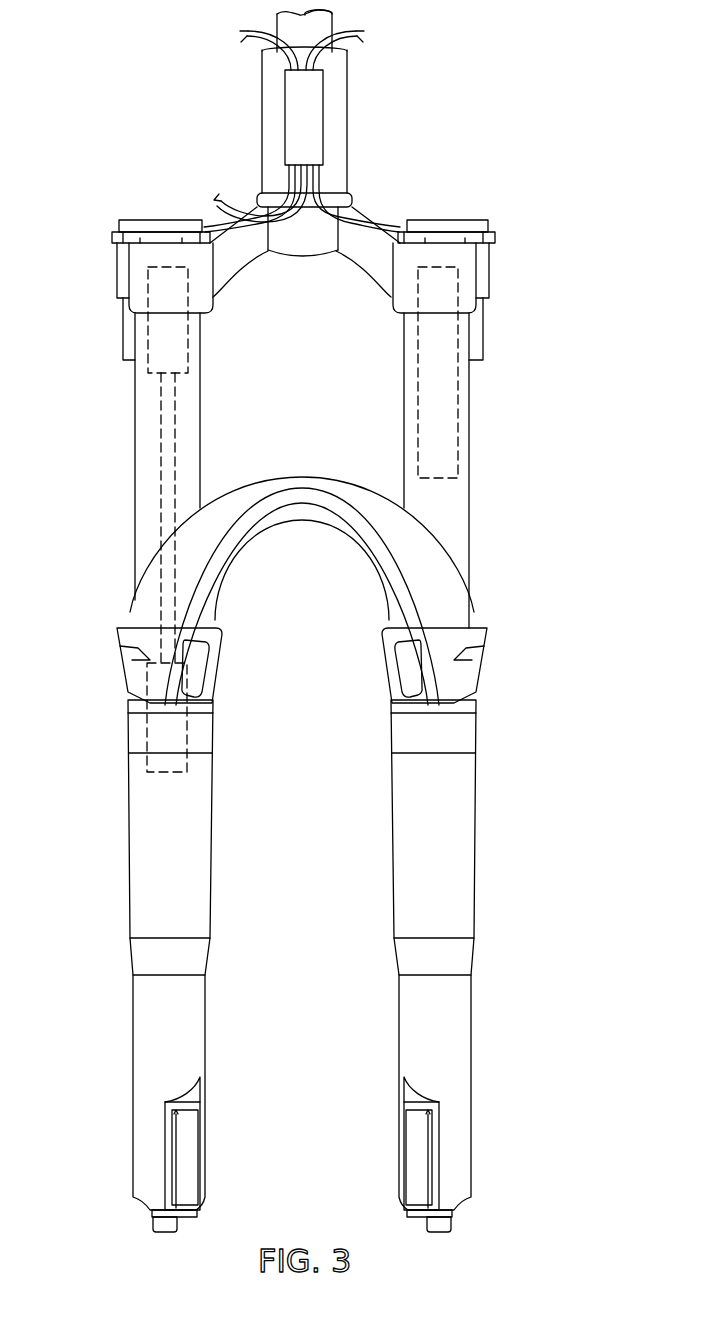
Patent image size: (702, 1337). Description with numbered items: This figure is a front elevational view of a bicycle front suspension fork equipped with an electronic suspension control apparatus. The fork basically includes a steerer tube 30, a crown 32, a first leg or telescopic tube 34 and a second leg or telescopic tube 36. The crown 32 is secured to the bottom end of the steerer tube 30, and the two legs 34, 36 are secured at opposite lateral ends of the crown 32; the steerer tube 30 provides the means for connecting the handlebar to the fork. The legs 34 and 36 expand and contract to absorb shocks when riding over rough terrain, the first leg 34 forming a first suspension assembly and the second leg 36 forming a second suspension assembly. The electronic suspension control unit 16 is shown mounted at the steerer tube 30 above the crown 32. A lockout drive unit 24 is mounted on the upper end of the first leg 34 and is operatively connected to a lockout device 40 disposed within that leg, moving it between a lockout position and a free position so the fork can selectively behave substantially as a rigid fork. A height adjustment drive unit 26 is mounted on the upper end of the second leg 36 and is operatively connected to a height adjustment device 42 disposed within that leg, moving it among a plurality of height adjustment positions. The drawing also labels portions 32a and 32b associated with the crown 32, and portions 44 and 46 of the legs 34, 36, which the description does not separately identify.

The electronic suspension control unit 16 is at (283, 88).
The lockout drive unit 24 is at (157, 216).
The height adjustment drive unit 26 is at (449, 197).
The steerer tube 30 is at (332, 27).
The crown 32 is at (370, 216).
The cable loop portion 32a is at (270, 205).
The cable connector 32b is at (118, 270).
The first leg 34 is at (47, 580).
The second leg 36 is at (550, 580).
The lockout device 40 is at (133, 338).
The height adjustment device 42 is at (461, 408).
The lower tube 44 is at (128, 732).
The upper tube 46 is at (469, 530).